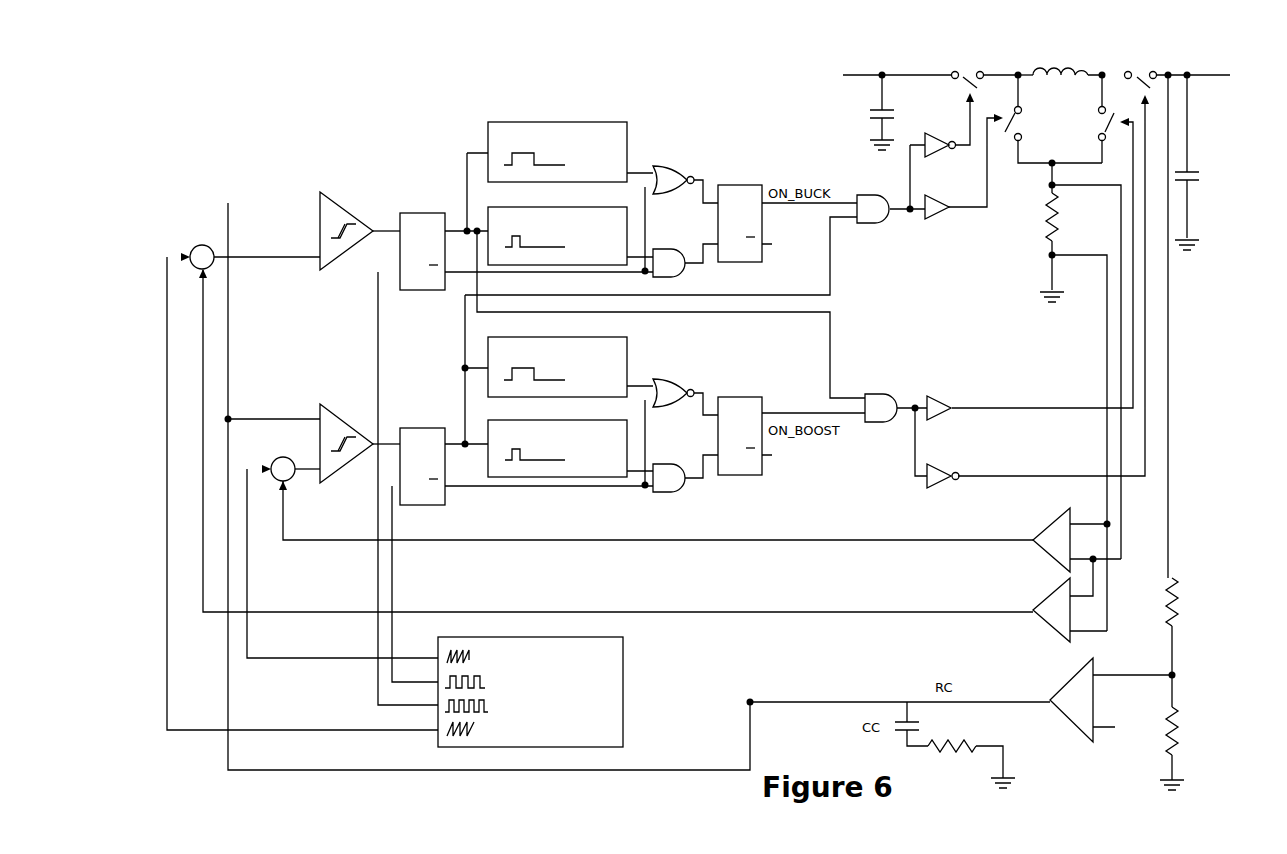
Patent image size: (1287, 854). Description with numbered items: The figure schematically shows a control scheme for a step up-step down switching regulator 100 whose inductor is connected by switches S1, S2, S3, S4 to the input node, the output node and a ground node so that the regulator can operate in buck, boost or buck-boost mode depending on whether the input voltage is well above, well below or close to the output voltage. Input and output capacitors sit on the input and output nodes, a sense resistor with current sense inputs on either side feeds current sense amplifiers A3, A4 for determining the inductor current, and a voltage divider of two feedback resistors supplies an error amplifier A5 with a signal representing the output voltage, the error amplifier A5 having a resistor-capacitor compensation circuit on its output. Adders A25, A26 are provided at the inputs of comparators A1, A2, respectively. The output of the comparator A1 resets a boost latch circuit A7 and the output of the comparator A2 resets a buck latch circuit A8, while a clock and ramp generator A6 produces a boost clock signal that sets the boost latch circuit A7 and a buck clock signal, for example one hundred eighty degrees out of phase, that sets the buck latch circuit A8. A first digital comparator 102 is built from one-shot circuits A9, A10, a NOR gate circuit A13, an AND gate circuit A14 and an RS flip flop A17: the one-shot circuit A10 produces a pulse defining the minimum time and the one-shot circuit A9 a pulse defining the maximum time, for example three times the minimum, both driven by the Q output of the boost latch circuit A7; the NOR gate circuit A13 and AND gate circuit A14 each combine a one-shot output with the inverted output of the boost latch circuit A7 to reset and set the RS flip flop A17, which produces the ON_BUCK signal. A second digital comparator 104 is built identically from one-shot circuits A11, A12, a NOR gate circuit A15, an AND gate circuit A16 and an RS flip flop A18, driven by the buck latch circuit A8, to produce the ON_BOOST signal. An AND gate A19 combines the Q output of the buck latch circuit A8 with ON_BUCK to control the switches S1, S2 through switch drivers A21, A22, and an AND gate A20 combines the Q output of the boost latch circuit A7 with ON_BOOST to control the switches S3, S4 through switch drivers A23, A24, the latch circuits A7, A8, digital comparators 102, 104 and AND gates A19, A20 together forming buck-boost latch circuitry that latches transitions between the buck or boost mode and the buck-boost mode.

The step up-step down switching regulator 100 is at (1016, 53).
The first digital comparator 102 is at (747, 149).
The second digital comparator 104 is at (747, 365).
The comparator A1 is at (346, 228).
The comparator A2 is at (346, 440).
The current sense amplifier A3 is at (1048, 540).
The current sense amplifier A4 is at (1048, 610).
The error amplifier A5 is at (1089, 700).
The clock and ramp generator A6 is at (530, 682).
The boost latch circuit A7 is at (422, 243).
The buck latch circuit A8 is at (421, 457).
The one-shot circuit A9 is at (557, 143).
The one-shot circuit A10 is at (557, 227).
The one-shot circuit A11 is at (557, 358).
The one-shot circuit A12 is at (557, 440).
The NOR gate circuit A13 is at (673, 171).
The AND gate circuit A14 is at (668, 255).
The NOR gate circuit A15 is at (673, 384).
The AND gate circuit A16 is at (668, 470).
The RS flip flop A17 is at (740, 214).
The RS flip flop A18 is at (740, 426).
The AND gate A19 is at (872, 199).
The AND gate A20 is at (878, 398).
The switch driver A21 is at (937, 135).
The switch driver A22 is at (940, 197).
The switch driver A23 is at (938, 397).
The switch driver A24 is at (941, 465).
The adder A25 is at (200, 247).
The adder A26 is at (280, 459).
The switch S1 is at (962, 89).
The switch S2 is at (1006, 129).
The switch S3 is at (1114, 129).
The switch S4 is at (1135, 89).